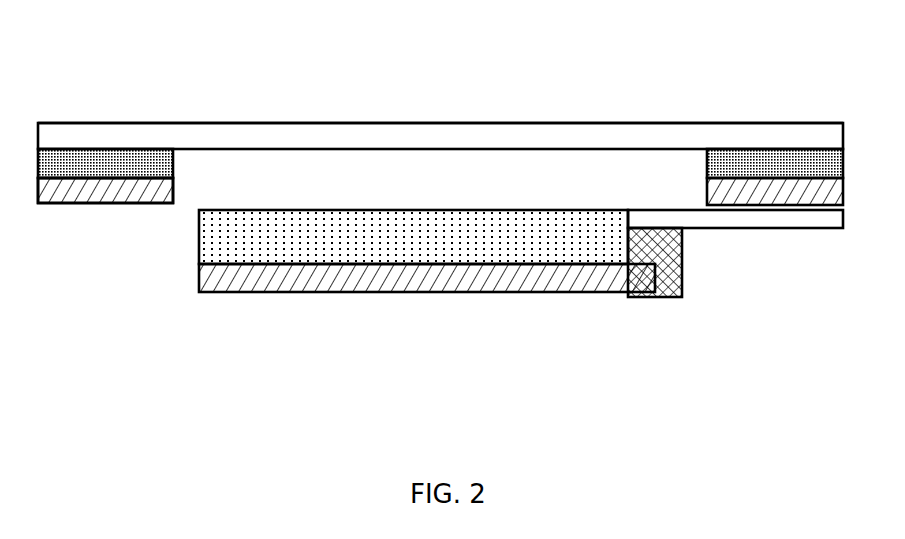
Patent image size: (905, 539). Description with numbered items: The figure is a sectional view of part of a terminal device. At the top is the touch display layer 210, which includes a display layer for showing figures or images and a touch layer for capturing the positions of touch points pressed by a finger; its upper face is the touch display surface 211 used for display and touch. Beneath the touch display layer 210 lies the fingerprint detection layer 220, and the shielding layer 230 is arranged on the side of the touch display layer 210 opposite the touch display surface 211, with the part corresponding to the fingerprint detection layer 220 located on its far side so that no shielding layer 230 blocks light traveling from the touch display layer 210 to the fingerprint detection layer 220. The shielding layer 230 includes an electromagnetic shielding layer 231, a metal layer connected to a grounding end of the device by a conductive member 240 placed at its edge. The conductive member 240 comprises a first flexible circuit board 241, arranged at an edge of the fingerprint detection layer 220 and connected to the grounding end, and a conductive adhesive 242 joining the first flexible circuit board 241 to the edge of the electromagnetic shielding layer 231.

The touch display layer 210 is at (445, 137).
The touch display surface 211 is at (578, 120).
The fingerprint detection layer 220 is at (312, 250).
The shielding layer 230 is at (130, 217).
The electromagnetic shielding layer 231 is at (62, 198).
The conductive member 240 is at (735, 300).
The first flexible circuit board 241 is at (802, 222).
The conductive adhesive 242 is at (682, 280).